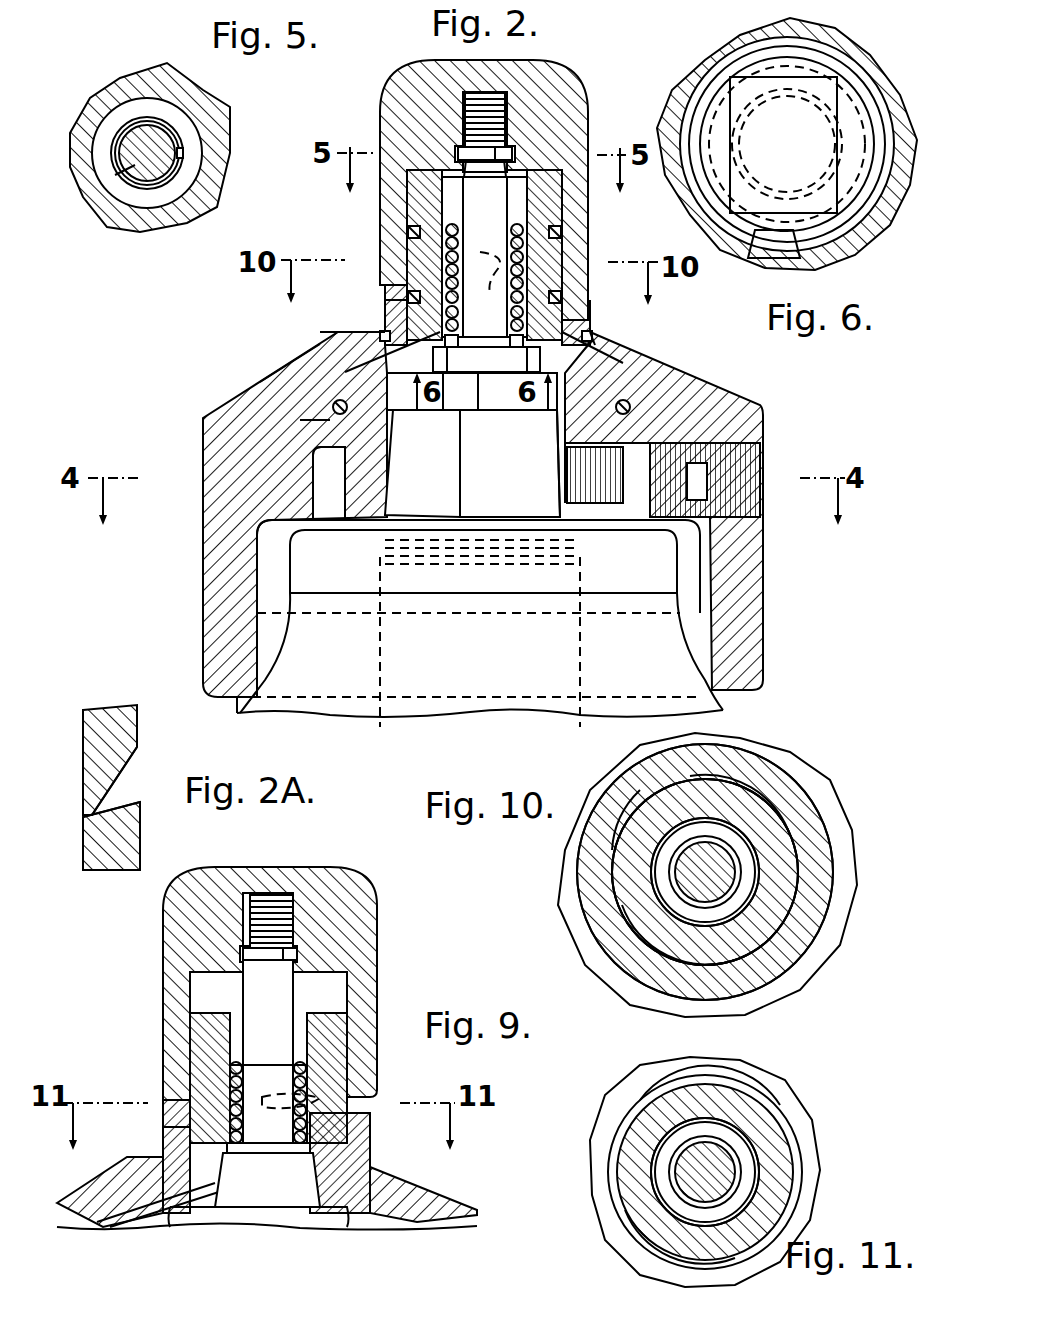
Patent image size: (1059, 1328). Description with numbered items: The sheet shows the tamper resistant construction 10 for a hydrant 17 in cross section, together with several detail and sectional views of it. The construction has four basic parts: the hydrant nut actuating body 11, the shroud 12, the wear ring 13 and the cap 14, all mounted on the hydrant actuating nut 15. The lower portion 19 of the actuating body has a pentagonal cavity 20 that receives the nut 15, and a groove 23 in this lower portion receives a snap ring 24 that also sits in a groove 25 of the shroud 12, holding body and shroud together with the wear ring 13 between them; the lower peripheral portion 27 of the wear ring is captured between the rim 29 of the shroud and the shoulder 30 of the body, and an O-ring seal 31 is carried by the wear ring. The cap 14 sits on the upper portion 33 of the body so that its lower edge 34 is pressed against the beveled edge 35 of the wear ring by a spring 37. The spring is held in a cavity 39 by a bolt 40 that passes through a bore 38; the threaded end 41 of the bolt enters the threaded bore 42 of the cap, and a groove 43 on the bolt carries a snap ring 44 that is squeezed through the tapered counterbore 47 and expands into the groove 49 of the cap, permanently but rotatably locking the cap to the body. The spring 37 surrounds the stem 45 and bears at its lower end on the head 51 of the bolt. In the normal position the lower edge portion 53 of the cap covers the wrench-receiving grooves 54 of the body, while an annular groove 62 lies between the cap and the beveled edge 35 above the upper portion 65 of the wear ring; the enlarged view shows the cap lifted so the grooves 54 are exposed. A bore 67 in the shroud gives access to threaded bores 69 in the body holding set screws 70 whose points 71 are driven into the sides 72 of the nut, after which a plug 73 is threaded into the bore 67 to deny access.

In FIG. 2, the tamper resistant construction 10 is at (612, 95).
In FIG. 2, the hydrant nut actuating body 11 is at (630, 382).
In FIG. 9, the hydrant nut actuating body 11 is at (377, 1220).
In FIG. 10, the hydrant nut actuating body 11 is at (600, 847).
In FIG. 11, the hydrant nut actuating body 11 is at (795, 1130).
In FIG. 2, the shroud 12 is at (742, 393).
In FIG. 9, the shroud 12 is at (440, 1190).
In FIG. 10, the shroud 12 is at (603, 780).
In FIG. 2, the wear ring 13 is at (385, 318).
In FIG. 6, the wear ring 13 is at (878, 60).
In FIG. 2A, the wear ring 13 is at (110, 872).
In FIG. 9, the wear ring 13 is at (372, 1143).
In FIG. 11, the wear ring 13 is at (805, 1160).
In FIG. 2, the cap 14 is at (383, 88).
In FIG. 5, the cap 14 is at (207, 97).
In FIG. 2A, the cap 14 is at (83, 745).
In FIG. 9, the cap 14 is at (377, 900).
In FIG. 10, the cap 14 is at (815, 940).
In FIG. 2, the hydrant actuating nut 15 is at (510, 463).
In FIG. 2, the hydrant 17 is at (237, 712).
In FIG. 2, the lower portion 19 is at (313, 476).
In FIG. 2, the cavity 20 is at (540, 430).
In FIG. 2, the groove 23 is at (400, 422).
In FIG. 2, the snap ring 24 is at (333, 403).
In FIG. 2, the groove 25 is at (327, 416).
In FIG. 2, the lower peripheral portion 27 is at (325, 336).
In FIG. 2, the rim 29 is at (615, 330).
In FIG. 9, the rim 29 is at (120, 1158).
In FIG. 10, the rim 29 is at (578, 960).
In FIG. 2, the shoulder 30 is at (300, 360).
In FIG. 2, the O-ring seal 31 is at (600, 346).
In FIG. 9, the O-ring seal 31 is at (130, 1212).
In FIG. 2, the upper portion 33 is at (407, 200).
In FIG. 2, the lower edge 34 is at (385, 287).
In FIG. 2A, the lower edge 34 is at (142, 812).
In FIG. 9, the lower edge 34 is at (172, 1095).
In FIG. 2, the beveled edge 35 is at (588, 290).
In FIG. 2A, the beveled edge 35 is at (85, 820).
In FIG. 9, the beveled edge 35 is at (168, 1127).
In FIG. 2, the spring 37 is at (565, 236).
In FIG. 6, the spring 37 is at (735, 128).
In FIG. 9, the spring 37 is at (197, 1058).
In FIG. 10, the spring 37 is at (822, 842).
In FIG. 11, the spring 37 is at (800, 1182).
In FIG. 2, the bore 38 is at (463, 214).
In FIG. 9, the bore 38 is at (285, 1008).
In FIG. 2, the cavity 39 is at (445, 245).
In FIG. 6, the cavity 39 is at (815, 262).
In FIG. 9, the cavity 39 is at (245, 1112).
In FIG. 10, the cavity 39 is at (770, 805).
In FIG. 2, the bolt 40 is at (565, 207).
In FIG. 5, the bolt 40 is at (103, 216).
In FIG. 6, the bolt 40 is at (852, 233).
In FIG. 9, the bolt 40 is at (268, 1051).
In FIG. 10, the bolt 40 is at (820, 797).
In FIG. 11, the bolt 40 is at (625, 1245).
In FIG. 2, the threaded end 41 is at (465, 120).
In FIG. 9, the threaded end 41 is at (250, 928).
In FIG. 2, the threaded bore 42 is at (535, 62).
In FIG. 9, the threaded bore 42 is at (310, 870).
In FIG. 5, the groove 43 is at (183, 172).
In FIG. 2, the snap ring 44 is at (458, 152).
In FIG. 5, the snap ring 44 is at (120, 118).
In FIG. 9, the snap ring 44 is at (243, 955).
In FIG. 2, the stem 45 is at (527, 172).
In FIG. 2, the tapered counterbore 47 is at (505, 203).
In FIG. 2, the groove 49 is at (512, 152).
In FIG. 5, the groove 49 is at (188, 153).
In FIG. 9, the groove 49 is at (297, 956).
In FIG. 2, the head 51 is at (486, 353).
In FIG. 6, the head 51 is at (740, 262).
In FIG. 9, the head 51 is at (262, 1157).
In FIG. 2, the lower edge portion 53 is at (562, 262).
In FIG. 9, the lower edge portion 53 is at (365, 1073).
In FIG. 10, the lower edge portion 53 is at (815, 905).
In FIG. 2, the wrench-receiving grooves 54 is at (481, 281).
In FIG. 9, the wrench-receiving grooves 54 is at (360, 1100).
In FIG. 10, the wrench-receiving grooves 54 is at (800, 777).
In FIG. 11, the wrench-receiving grooves 54 is at (780, 1085).
In FIG. 2, the annular groove 62 is at (590, 305).
In FIG. 2A, the annular groove 62 is at (92, 810).
In FIG. 2, the upper portion 65 is at (385, 300).
In FIG. 2A, the upper portion 65 is at (85, 860).
In FIG. 2, the bore 67 is at (655, 440).
In FIG. 2, the bores 69 is at (625, 455).
In FIG. 2, the set screw 70 is at (608, 525).
In FIG. 2, the point 71 is at (565, 487).
In FIG. 2, the side 72 is at (616, 407).
In FIG. 2, the plug 73 is at (765, 462).